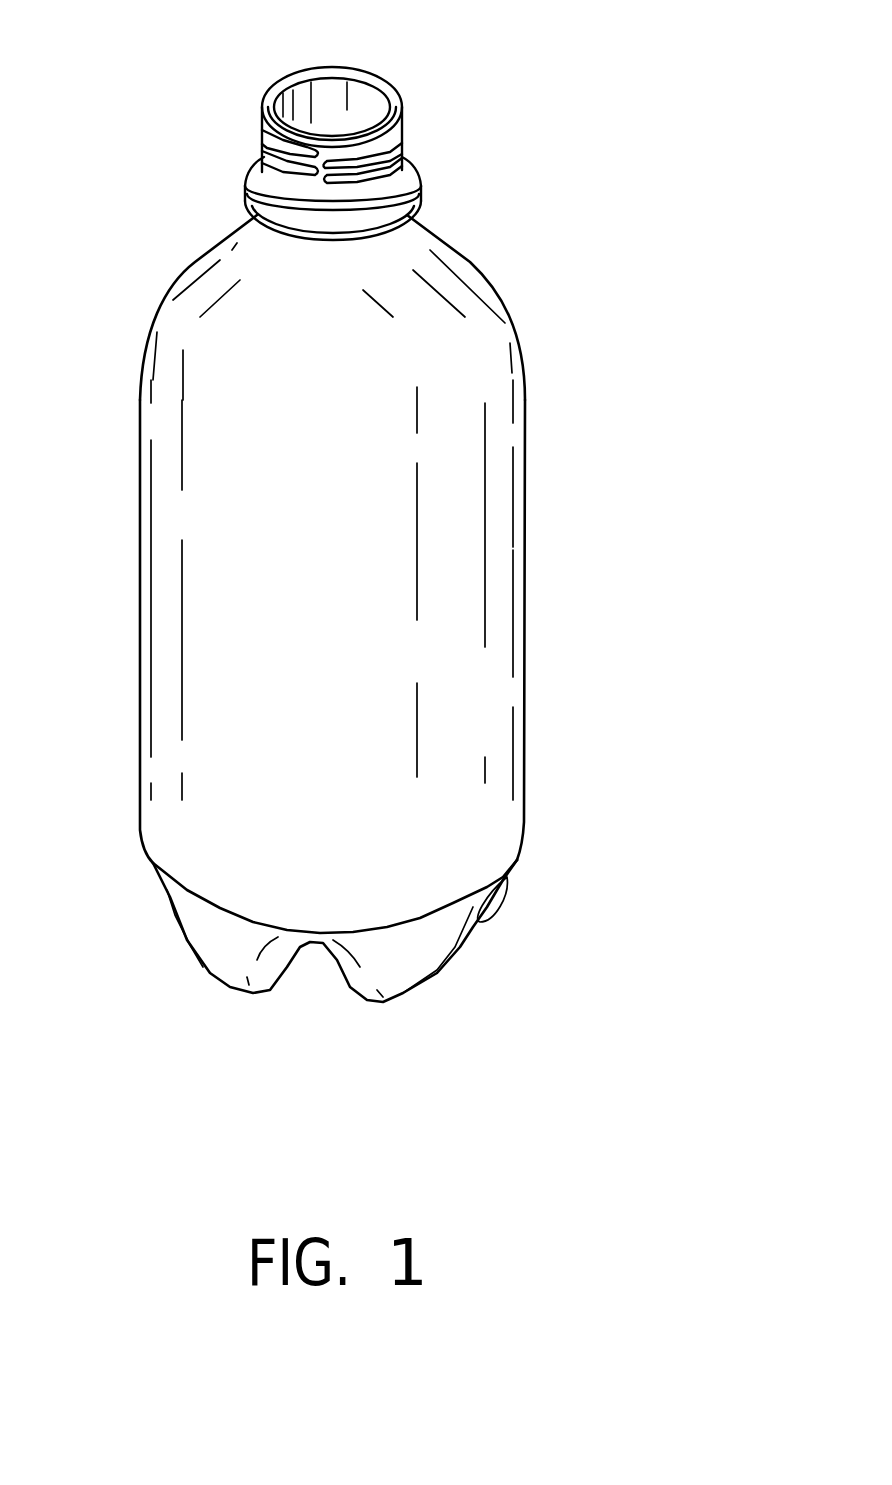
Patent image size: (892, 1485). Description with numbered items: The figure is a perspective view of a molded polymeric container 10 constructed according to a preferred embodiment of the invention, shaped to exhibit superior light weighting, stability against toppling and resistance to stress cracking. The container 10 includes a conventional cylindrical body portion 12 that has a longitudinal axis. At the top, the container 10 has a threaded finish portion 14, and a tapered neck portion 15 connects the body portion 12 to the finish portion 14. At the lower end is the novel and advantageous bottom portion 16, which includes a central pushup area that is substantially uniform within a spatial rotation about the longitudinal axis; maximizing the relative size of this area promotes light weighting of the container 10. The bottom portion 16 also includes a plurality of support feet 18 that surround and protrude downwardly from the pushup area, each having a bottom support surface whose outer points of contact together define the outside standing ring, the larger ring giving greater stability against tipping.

The molded polymeric container 10 is at (399, 548).
The cylindrical body portion 12 is at (523, 575).
The threaded finish portion 14 is at (401, 115).
The tapered neck portion 15 is at (463, 257).
The bottom portion 16 is at (343, 978).
The support feet 18 is at (420, 962).